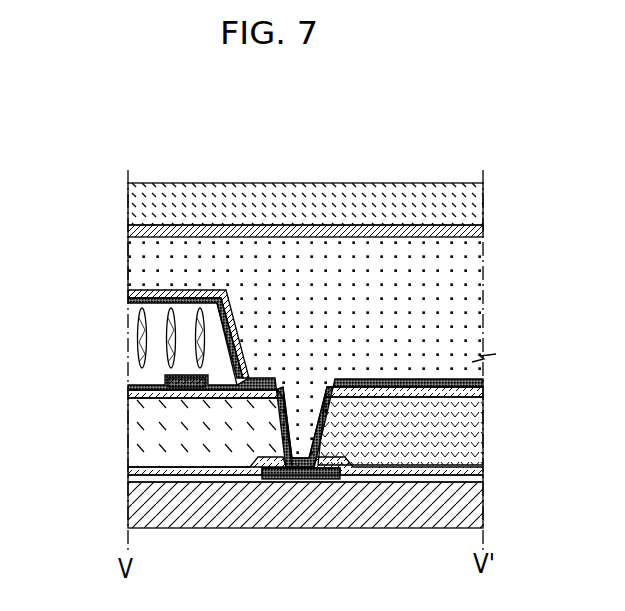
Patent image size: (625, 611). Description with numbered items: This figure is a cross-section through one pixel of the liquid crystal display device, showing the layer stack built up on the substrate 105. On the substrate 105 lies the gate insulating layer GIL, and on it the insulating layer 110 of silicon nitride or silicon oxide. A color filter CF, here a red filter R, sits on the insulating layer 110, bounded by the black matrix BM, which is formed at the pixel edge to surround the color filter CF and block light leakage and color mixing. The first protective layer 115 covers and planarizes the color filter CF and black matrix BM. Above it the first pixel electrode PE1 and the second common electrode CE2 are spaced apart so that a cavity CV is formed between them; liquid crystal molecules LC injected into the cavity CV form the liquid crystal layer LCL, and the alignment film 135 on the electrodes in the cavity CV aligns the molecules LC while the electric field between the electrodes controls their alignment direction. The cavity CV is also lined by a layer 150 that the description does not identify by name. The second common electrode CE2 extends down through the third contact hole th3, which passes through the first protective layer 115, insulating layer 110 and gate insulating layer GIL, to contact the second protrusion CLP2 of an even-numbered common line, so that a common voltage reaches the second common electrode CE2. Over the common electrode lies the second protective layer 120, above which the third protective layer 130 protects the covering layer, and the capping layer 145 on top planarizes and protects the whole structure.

The capping layer 145 is at (132, 205).
The third protective layer 130 is at (132, 232).
The second protective layer 120 is at (135, 285).
The second common electrode CE2 is at (131, 294).
The roof / encapsulation layer 150 is at (129, 302).
The alignment film 135 is at (230, 320).
The third contact hole th3 is at (312, 408).
The cavity CV is at (135, 325).
The liquid crystal layer LCL is at (147, 340).
The liquid crystal molecules LC is at (158, 352).
The first pixel electrode PE1 is at (180, 388).
The first protective layer 115 is at (128, 398).
The color filter CF is at (143, 442).
The red filter R is at (190, 435).
The black matrix BM is at (400, 431).
The insulating layer 110 is at (140, 469).
The second protrusion CLP2 is at (296, 480).
The gate insulating layer GIL is at (135, 478).
The substrate 105 is at (135, 512).